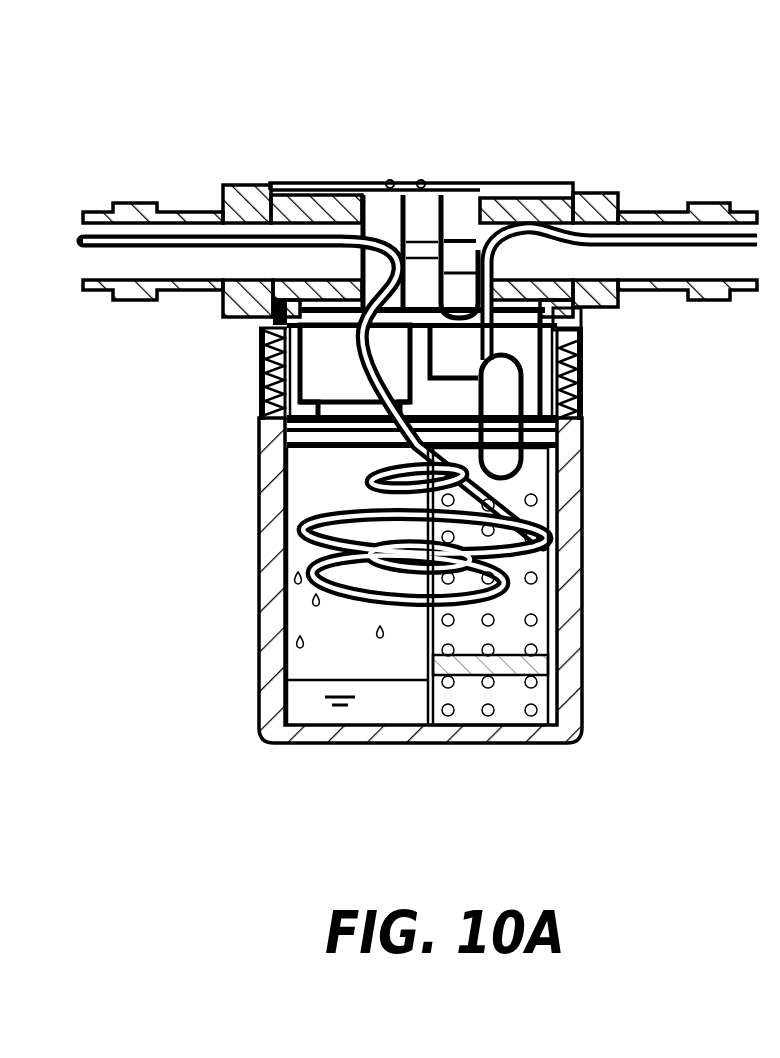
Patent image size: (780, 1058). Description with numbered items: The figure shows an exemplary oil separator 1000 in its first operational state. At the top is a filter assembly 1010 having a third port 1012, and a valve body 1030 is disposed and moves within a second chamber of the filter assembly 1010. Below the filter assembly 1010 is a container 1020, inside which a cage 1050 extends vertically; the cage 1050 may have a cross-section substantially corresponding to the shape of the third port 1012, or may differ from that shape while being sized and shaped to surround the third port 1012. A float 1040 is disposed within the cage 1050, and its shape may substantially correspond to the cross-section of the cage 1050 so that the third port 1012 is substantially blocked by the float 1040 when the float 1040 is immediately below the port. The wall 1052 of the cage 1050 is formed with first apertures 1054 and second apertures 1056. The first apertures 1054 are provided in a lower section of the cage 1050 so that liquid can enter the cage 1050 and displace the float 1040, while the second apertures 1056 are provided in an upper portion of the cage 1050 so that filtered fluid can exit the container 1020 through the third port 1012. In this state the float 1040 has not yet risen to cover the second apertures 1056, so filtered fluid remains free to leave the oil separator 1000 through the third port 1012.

The oil separator 1000 is at (390, 131).
The filter assembly 1010 is at (246, 184).
The third port 1012 is at (585, 383).
The container 1020 is at (260, 418).
The valve body 1030 is at (578, 360).
The float 1040 is at (583, 636).
The cage 1050 is at (583, 490).
The wall 1052 is at (585, 598).
The first apertures 1054 is at (583, 551).
The second apertures 1056 is at (578, 465).